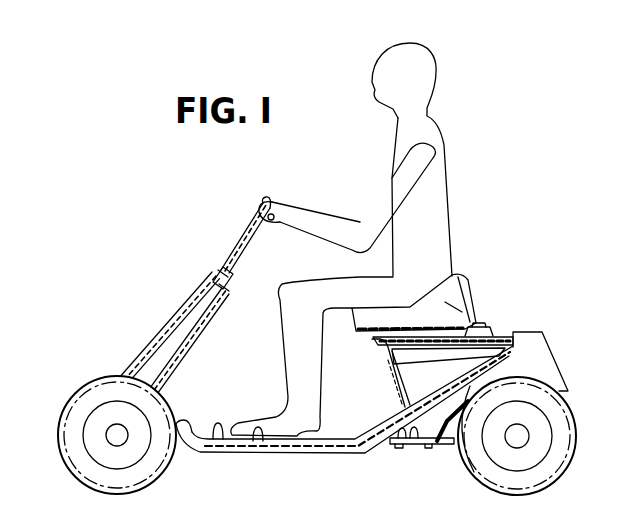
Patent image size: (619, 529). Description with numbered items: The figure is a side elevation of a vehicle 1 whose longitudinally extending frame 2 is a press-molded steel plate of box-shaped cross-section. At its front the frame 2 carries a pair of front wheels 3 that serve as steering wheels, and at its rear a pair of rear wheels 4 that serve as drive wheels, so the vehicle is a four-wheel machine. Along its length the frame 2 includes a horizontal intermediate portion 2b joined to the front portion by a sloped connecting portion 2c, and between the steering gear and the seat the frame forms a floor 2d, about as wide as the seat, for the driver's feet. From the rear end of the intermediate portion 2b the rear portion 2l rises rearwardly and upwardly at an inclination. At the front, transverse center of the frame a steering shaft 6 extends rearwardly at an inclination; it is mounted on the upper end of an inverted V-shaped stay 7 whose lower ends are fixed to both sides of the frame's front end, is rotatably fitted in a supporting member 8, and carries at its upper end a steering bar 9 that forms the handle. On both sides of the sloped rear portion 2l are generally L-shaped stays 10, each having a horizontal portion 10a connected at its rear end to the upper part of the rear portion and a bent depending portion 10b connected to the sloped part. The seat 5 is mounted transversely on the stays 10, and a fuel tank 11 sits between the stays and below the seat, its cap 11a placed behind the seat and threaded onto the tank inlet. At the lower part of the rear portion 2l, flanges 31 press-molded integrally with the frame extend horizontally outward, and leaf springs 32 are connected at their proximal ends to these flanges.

The vehicle 1 is at (200, 281).
The frame 2 is at (287, 448).
The horizontal intermediate portion 2b is at (212, 440).
The sloped connecting portion 2c is at (185, 447).
The floor 2d is at (258, 440).
The rear portion 2l is at (470, 450).
The front wheel 3 is at (100, 397).
The rear wheel 4 is at (572, 430).
The seat 5 is at (417, 320).
The steering shaft 6 is at (254, 233).
The inverted V-shaped stay 7 is at (168, 323).
The supporting member 8 is at (226, 282).
The steering bar 9 is at (273, 218).
The L-shaped stay 10 is at (378, 348).
The horizontal portion 10a is at (492, 340).
The bent depending portion 10b is at (389, 385).
The fuel tank 11 is at (444, 350).
The cap 11a is at (489, 323).
The flange 31 is at (402, 445).
The leaf spring 32 is at (452, 447).